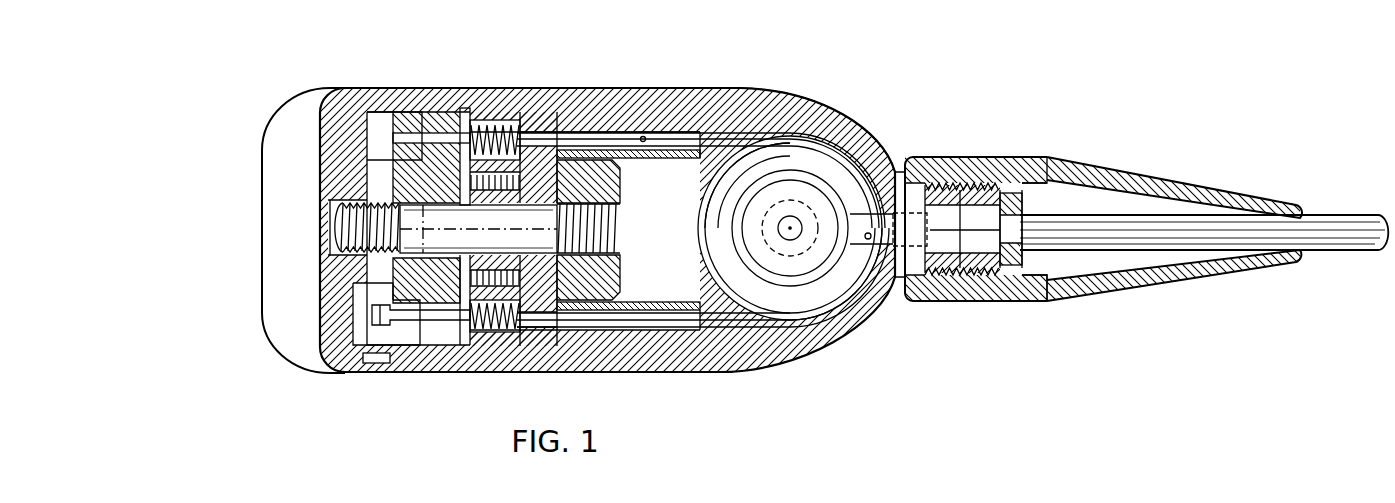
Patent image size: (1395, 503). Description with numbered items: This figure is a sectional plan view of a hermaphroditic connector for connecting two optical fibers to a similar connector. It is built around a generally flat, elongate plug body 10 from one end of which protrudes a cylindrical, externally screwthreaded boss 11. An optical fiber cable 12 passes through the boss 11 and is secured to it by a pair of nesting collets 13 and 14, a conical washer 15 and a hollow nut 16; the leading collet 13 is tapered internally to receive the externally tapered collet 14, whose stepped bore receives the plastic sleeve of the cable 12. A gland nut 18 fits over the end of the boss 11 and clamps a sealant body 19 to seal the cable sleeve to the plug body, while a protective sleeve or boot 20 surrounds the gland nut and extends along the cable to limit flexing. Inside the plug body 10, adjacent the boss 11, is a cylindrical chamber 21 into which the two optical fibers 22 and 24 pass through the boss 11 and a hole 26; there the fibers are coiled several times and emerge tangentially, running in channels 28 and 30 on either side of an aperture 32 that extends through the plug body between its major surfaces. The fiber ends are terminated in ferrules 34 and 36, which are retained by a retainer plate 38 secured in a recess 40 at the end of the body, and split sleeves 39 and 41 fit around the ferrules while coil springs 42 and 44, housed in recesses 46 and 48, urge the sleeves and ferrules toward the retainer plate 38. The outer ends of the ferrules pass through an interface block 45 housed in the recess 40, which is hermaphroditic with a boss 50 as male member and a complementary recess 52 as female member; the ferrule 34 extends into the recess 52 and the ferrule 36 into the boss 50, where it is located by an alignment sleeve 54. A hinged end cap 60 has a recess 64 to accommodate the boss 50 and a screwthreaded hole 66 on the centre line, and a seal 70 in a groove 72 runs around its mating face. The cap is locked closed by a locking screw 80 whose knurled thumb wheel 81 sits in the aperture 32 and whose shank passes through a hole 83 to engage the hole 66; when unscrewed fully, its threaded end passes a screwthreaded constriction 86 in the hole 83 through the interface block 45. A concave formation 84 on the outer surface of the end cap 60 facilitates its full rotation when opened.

The plug body 10 is at (647, 355).
The boss 11 is at (897, 275).
The optical fiber cable 12 is at (1333, 235).
The leading collet 13 is at (890, 175).
The collet 14 is at (933, 167).
The conical washer 15 is at (957, 173).
The hollow nut 16 is at (973, 225).
The gland nut 18 is at (1038, 282).
The sealant body 19 is at (1022, 190).
The protective sleeve or boot 20 is at (1077, 293).
The cylindrical chamber 21 is at (793, 323).
The optical fiber 22 is at (679, 137).
The optical fiber 24 is at (771, 332).
The hole 26 is at (873, 325).
The channel 28 is at (643, 130).
The channel 30 is at (692, 332).
The aperture 32 is at (715, 98).
The ferrule 34 is at (415, 135).
The ferrule 36 is at (413, 328).
The retainer plate 38 is at (463, 105).
The split sleeve 39 is at (484, 125).
The recess 40 is at (478, 120).
The split sleeve 41 is at (472, 363).
The coil spring 42 is at (515, 120).
The coil spring 44 is at (477, 341).
The interface block 45 is at (362, 186).
The recess 46 is at (545, 100).
The recess 48 is at (507, 341).
The boss 50 is at (357, 303).
The recess 52 is at (403, 122).
The alignment sleeve 54 is at (402, 328).
The end cap 60 is at (315, 104).
The recess 64 is at (355, 287).
The screwthreaded hole 66 is at (333, 220).
The seal 70 is at (376, 367).
The groove 72 is at (337, 364).
The locking screw 80 is at (538, 344).
The knurled thumb wheel 81 is at (596, 177).
The hole 83 is at (395, 263).
The concave formation 84 is at (282, 192).
The screwthreaded constriction 86 is at (328, 183).